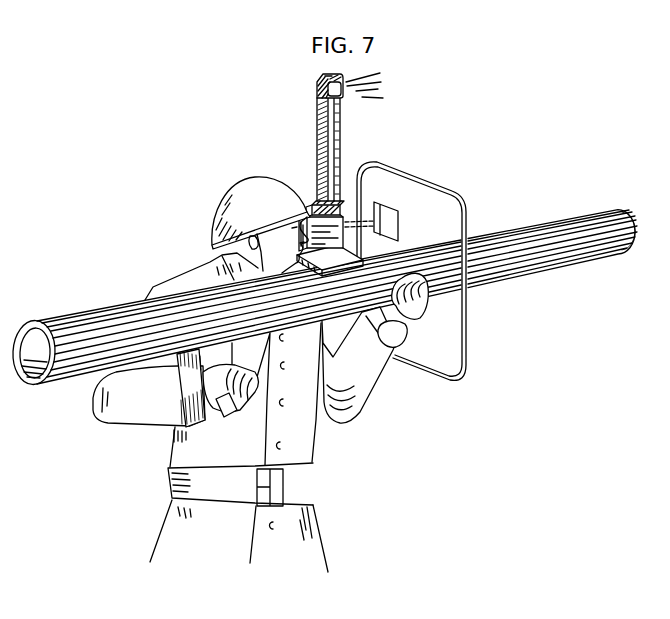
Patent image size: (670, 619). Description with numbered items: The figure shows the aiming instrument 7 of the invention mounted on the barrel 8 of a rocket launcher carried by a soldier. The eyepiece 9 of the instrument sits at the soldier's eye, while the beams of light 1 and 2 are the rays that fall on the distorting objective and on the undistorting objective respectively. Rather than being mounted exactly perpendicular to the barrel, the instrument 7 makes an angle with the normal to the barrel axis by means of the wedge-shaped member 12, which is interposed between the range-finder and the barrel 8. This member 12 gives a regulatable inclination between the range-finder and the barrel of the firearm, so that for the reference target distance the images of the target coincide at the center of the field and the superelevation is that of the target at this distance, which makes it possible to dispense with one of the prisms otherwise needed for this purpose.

The beam of light 1 is at (358, 88).
The beam of light 2 is at (352, 222).
The aiming instrument 7 is at (317, 137).
The barrel 8 is at (107, 323).
The eyepiece 9 is at (306, 210).
The wedge-shaped member 12 is at (356, 266).